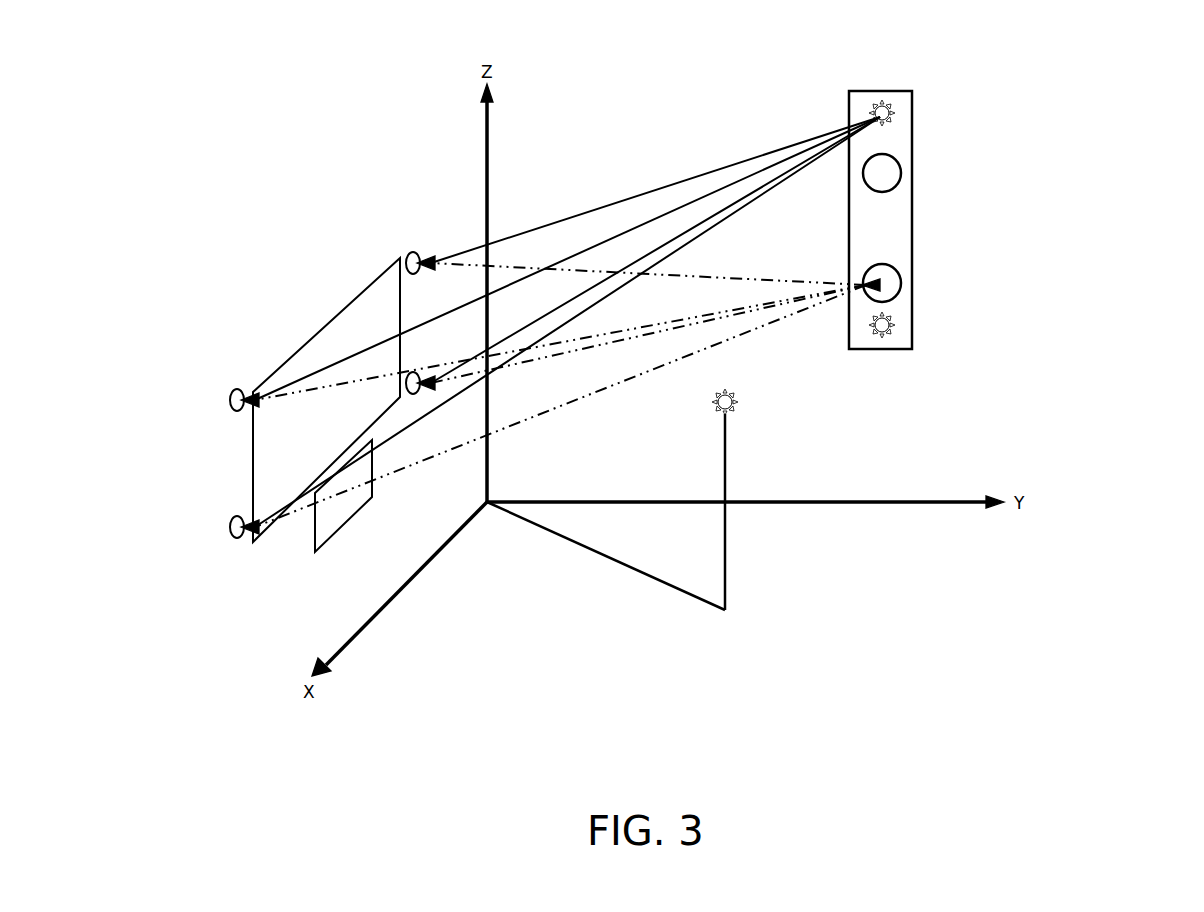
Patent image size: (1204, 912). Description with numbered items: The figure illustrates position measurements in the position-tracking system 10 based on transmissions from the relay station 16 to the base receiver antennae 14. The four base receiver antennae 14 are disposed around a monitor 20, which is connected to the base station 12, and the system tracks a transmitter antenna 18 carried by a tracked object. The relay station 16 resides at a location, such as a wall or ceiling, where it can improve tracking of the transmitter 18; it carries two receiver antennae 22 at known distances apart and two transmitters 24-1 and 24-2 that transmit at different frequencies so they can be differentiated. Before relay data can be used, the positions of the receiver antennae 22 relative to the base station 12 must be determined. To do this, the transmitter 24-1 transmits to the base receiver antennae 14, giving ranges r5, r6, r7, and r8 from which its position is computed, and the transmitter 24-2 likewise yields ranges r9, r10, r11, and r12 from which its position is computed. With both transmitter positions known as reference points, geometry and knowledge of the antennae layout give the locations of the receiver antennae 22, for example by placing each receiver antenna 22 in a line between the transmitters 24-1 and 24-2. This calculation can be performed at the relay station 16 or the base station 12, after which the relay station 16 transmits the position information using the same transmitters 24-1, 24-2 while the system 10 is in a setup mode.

The position-tracking system 10 is at (1152, 112).
The base station 12 is at (343, 496).
The base receiver antennae 14 is at (418, 257).
The relay station 16 is at (849, 91).
The transmitter antenna 18 is at (742, 404).
The monitor 20 is at (326, 400).
The receiver antennae 22 is at (900, 164).
The transmitter antenna 24-1 is at (888, 108).
The transmitter antenna 24-2 is at (878, 333).
The range r5 is at (778, 180).
The range r6 is at (658, 213).
The range r7 is at (757, 152).
The range r8 is at (698, 218).
The range r9 is at (640, 377).
The range r10 is at (612, 330).
The range r11 is at (733, 275).
The range r12 is at (612, 352).